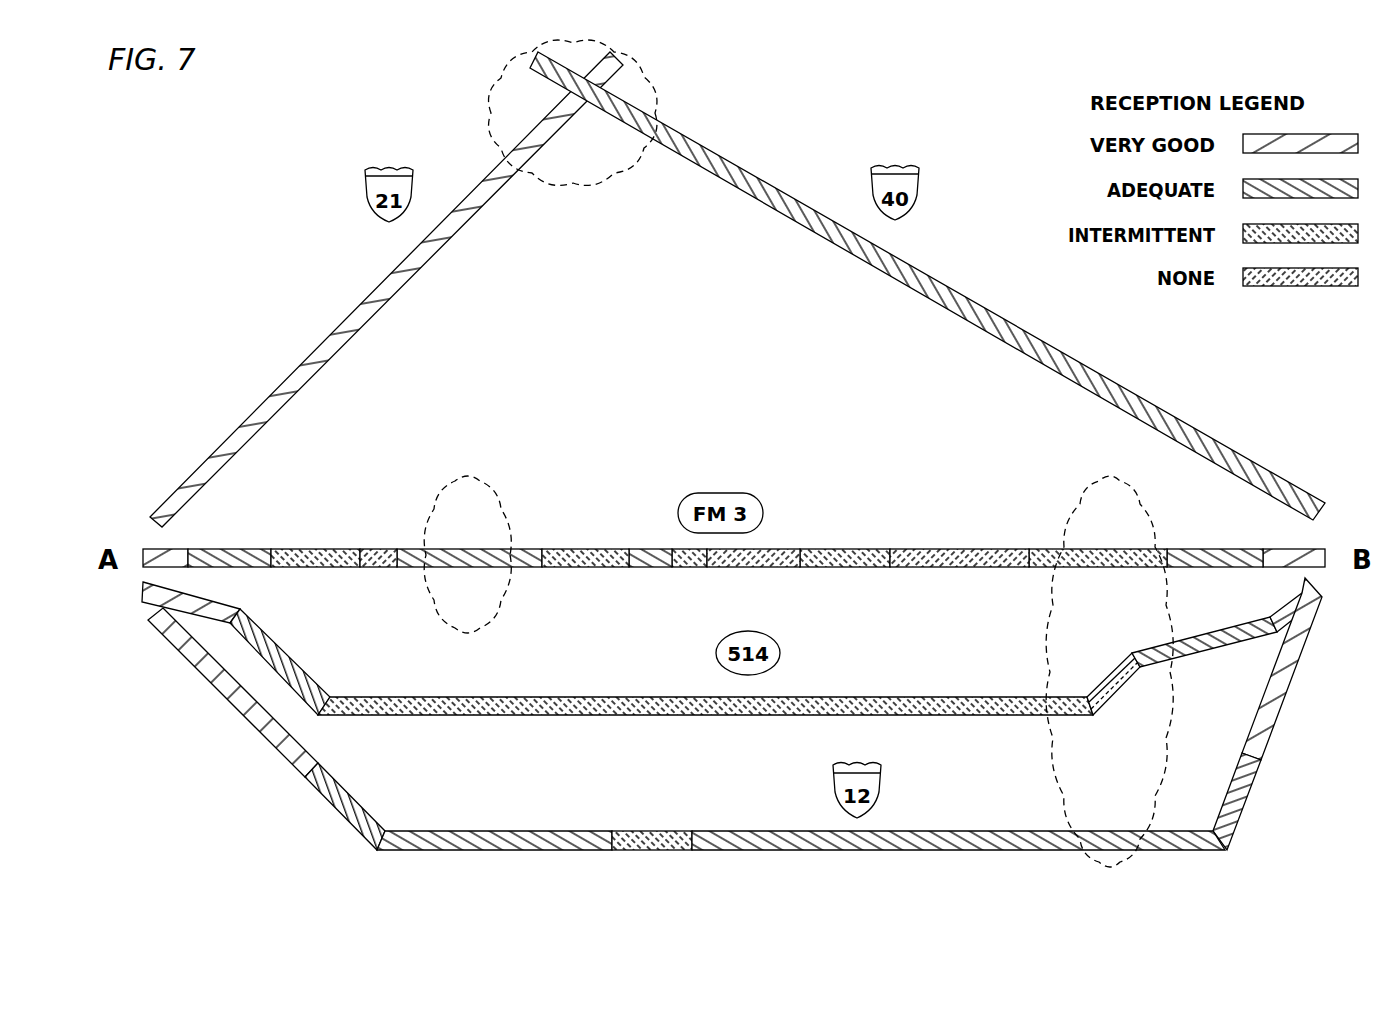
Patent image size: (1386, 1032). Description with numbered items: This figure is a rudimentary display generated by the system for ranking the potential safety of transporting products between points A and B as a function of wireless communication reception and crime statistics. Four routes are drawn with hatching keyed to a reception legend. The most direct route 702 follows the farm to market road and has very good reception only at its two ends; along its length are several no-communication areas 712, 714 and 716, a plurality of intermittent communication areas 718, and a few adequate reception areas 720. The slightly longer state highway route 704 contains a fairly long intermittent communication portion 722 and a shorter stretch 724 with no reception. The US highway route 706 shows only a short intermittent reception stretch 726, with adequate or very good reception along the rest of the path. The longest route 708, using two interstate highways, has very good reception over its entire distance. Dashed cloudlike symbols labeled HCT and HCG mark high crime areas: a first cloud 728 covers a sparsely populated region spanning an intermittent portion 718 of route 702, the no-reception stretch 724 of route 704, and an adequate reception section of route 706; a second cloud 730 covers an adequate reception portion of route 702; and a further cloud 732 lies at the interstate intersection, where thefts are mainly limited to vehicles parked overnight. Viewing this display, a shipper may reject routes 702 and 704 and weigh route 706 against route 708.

The farm to market road route 702 is at (734, 560).
The state highway route 704 is at (732, 714).
The US highway route 706 is at (686, 755).
The interstate highway route 708 is at (428, 284).
The no wireless communication area 712 is at (366, 548).
The no wireless communication area 714 is at (723, 567).
The no wireless communication area 716 is at (943, 567).
The intermittent communication area 718 is at (293, 567).
The adequate reception area 720 is at (213, 548).
The intermittent communication portion 722 is at (430, 697).
The no reception stretch 724 is at (1115, 693).
The intermittent reception stretch 726 is at (647, 831).
The high crime area cloud 728 is at (1040, 645).
The high crime area cloud 730 is at (470, 470).
The high crime area cloud 732 is at (588, 183).